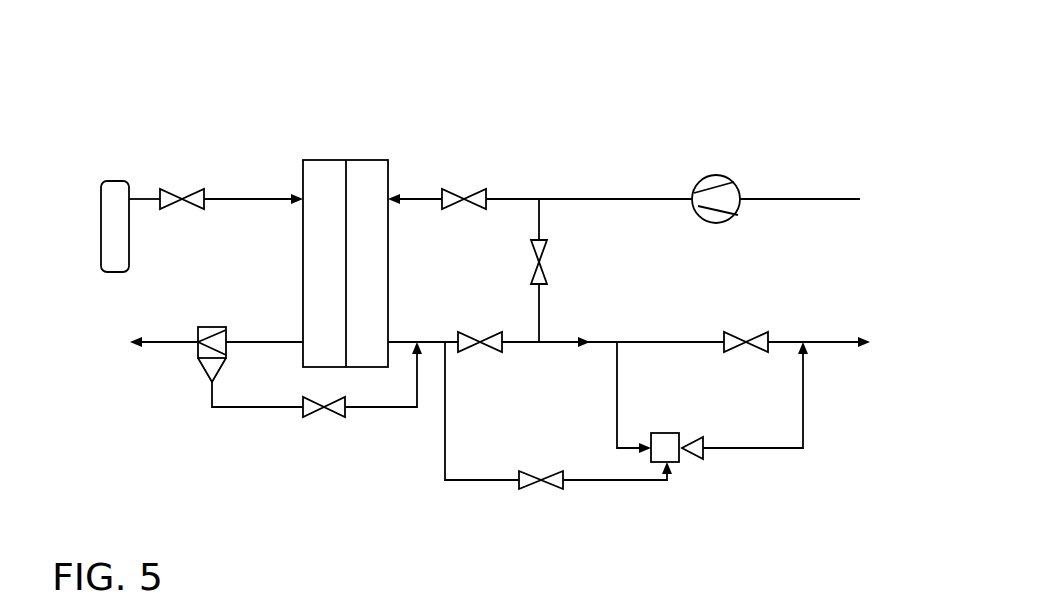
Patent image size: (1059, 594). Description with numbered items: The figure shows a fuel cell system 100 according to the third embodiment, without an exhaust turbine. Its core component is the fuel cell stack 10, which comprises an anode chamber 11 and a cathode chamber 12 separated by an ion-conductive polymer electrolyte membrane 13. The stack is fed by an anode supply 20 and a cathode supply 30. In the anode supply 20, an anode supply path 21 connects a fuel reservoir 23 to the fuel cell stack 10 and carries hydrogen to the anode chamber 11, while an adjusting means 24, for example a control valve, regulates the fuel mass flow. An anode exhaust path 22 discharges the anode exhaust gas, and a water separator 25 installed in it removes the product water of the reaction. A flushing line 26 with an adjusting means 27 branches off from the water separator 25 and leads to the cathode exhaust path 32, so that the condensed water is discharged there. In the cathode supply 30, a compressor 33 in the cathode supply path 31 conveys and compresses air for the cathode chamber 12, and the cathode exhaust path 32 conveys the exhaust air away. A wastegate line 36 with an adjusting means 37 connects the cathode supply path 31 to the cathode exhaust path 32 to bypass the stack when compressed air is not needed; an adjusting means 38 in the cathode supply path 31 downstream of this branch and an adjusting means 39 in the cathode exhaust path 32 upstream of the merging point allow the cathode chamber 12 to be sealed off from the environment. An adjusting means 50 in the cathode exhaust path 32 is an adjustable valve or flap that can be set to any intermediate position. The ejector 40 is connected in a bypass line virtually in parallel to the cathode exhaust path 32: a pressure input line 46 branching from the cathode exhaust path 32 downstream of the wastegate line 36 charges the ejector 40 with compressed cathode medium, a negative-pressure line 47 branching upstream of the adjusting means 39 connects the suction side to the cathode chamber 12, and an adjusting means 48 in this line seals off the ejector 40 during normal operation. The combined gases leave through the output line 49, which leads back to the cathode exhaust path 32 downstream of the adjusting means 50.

The fuel cell system 100 is at (552, 95).
The fuel cell stack 10 is at (343, 100).
The anode chamber 11 is at (321, 177).
The cathode chamber 12 is at (366, 177).
The polymer electrolyte membrane 13 is at (346, 262).
The anode supply 20 is at (190, 104).
The anode supply path 21 is at (245, 199).
The anode exhaust path 22 is at (174, 342).
The fuel reservoir 23 is at (117, 199).
The adjusting means 24 is at (199, 204).
The water separator 25 is at (206, 329).
The flushing line 26 is at (406, 407).
The adjusting means 27 is at (338, 407).
The cathode supply 30 is at (631, 153).
The cathode supply path 31 is at (577, 199).
The cathode exhaust path 32 is at (604, 342).
The compressor 33 is at (715, 182).
The wastegate line 36 is at (538, 303).
The adjusting means 37 is at (539, 270).
The adjusting means 38 is at (479, 199).
The adjusting means 39 is at (462, 343).
The ejector 40 is at (659, 442).
The pressure input line 46 is at (617, 356).
The negative-pressure line 47 is at (478, 480).
The adjusting means 48 is at (557, 480).
The output line 49 is at (728, 448).
The adjusting means 50 is at (760, 342).